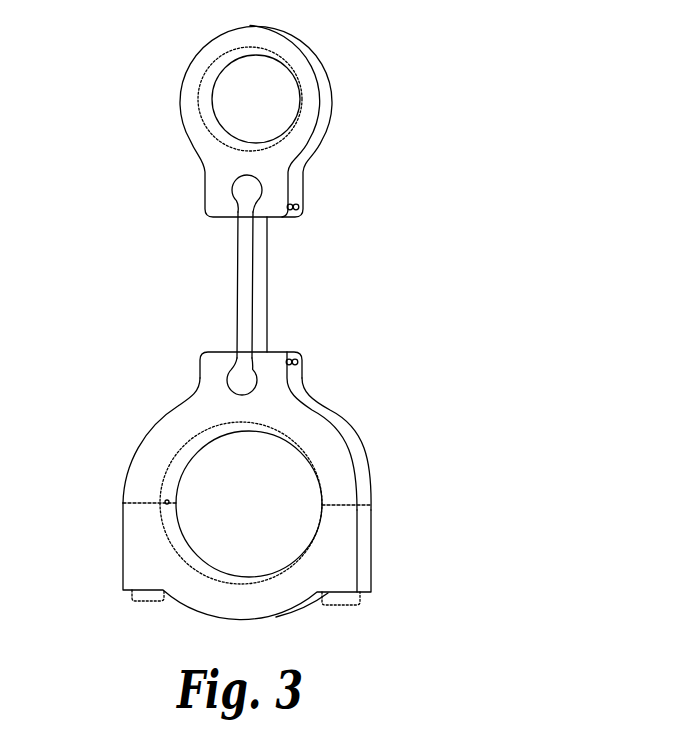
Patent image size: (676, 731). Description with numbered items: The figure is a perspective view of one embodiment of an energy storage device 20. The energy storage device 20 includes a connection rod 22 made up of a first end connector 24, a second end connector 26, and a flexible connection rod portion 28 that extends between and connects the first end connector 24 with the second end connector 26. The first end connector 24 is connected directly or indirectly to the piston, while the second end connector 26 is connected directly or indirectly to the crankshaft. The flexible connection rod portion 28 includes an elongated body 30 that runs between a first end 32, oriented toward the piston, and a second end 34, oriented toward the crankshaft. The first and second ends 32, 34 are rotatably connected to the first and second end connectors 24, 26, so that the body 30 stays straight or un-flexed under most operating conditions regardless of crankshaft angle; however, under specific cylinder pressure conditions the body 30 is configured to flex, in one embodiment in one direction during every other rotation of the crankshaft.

The energy storage device 20 is at (413, 290).
The connection rod 22 is at (120, 542).
The first end connector 24 is at (317, 74).
The second end connector 26 is at (363, 465).
The flexible connection rod portion 28 is at (237, 307).
The elongated body 30 is at (267, 268).
The first end 32 is at (248, 190).
The second end 34 is at (260, 382).